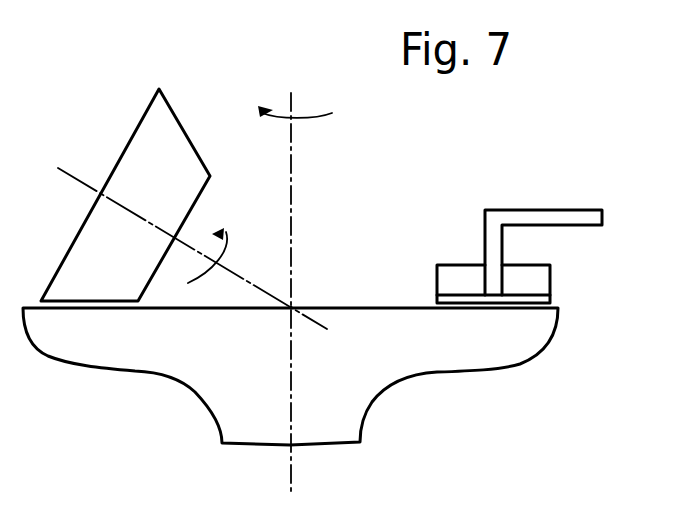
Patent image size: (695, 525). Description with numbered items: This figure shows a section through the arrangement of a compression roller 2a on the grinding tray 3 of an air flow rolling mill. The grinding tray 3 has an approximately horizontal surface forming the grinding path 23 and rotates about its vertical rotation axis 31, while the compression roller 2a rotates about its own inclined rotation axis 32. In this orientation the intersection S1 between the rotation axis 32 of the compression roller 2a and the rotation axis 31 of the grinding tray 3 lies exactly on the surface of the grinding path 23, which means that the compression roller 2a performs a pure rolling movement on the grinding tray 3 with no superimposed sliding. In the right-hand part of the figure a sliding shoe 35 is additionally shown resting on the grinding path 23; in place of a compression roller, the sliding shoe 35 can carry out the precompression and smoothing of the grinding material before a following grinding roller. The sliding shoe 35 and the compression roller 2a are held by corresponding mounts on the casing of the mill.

The compression roller 2a is at (148, 157).
The grinding tray 3 is at (475, 353).
The grinding path 23 is at (232, 308).
The rotation axis of the grinding tray 31 is at (291, 185).
The rotation axis of the compression roller 32 is at (78, 185).
The sliding shoe 35 is at (533, 280).
The intersection S1 is at (291, 307).